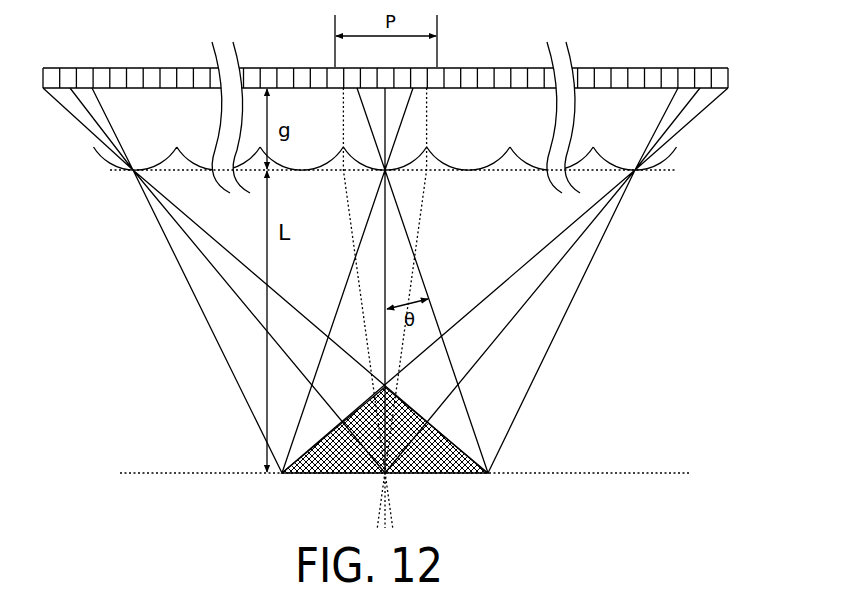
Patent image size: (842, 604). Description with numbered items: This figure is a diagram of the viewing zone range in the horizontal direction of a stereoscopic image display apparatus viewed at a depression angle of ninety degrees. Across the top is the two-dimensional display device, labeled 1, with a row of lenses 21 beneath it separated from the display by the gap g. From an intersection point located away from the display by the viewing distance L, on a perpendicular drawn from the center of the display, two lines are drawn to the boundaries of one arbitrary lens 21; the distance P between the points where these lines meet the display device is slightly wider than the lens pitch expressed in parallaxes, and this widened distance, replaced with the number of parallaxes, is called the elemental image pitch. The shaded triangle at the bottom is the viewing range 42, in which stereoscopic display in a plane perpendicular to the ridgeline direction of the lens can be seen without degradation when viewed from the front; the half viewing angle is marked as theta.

The lens array / display panel 1 is at (488, 68).
The lens 21 is at (473, 142).
The viewing range 42 is at (484, 459).